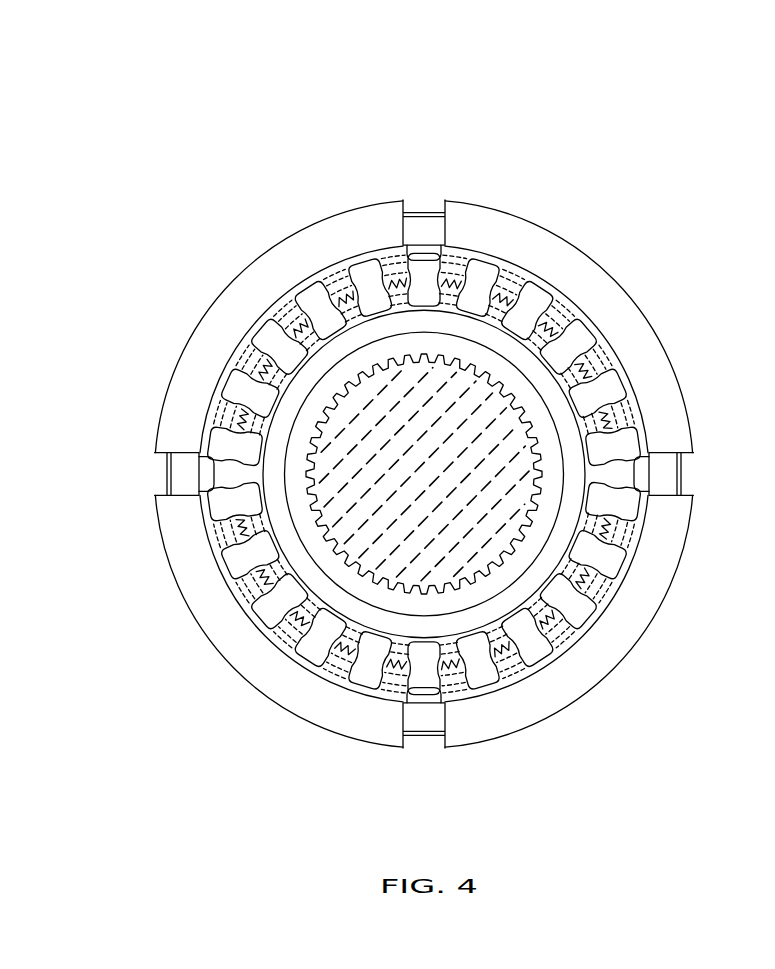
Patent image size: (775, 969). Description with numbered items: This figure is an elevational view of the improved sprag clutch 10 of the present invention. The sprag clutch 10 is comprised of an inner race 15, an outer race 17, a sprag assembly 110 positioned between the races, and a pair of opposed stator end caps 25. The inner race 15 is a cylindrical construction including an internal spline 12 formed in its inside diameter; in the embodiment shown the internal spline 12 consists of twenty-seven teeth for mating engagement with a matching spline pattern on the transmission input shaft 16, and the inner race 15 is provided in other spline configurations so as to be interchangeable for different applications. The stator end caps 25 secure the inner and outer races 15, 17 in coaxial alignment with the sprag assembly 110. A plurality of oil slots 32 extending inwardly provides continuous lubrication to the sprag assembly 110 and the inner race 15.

The sprag clutch 10 is at (355, 118).
The internal spline 12 is at (337, 432).
The inner race 15 is at (351, 378).
The transmission input shaft 16 is at (458, 486).
The outer race 17 is at (433, 226).
The stator end caps 25 is at (280, 308).
The oil slots 32 is at (407, 252).
The sprag assembly 110 is at (517, 262).